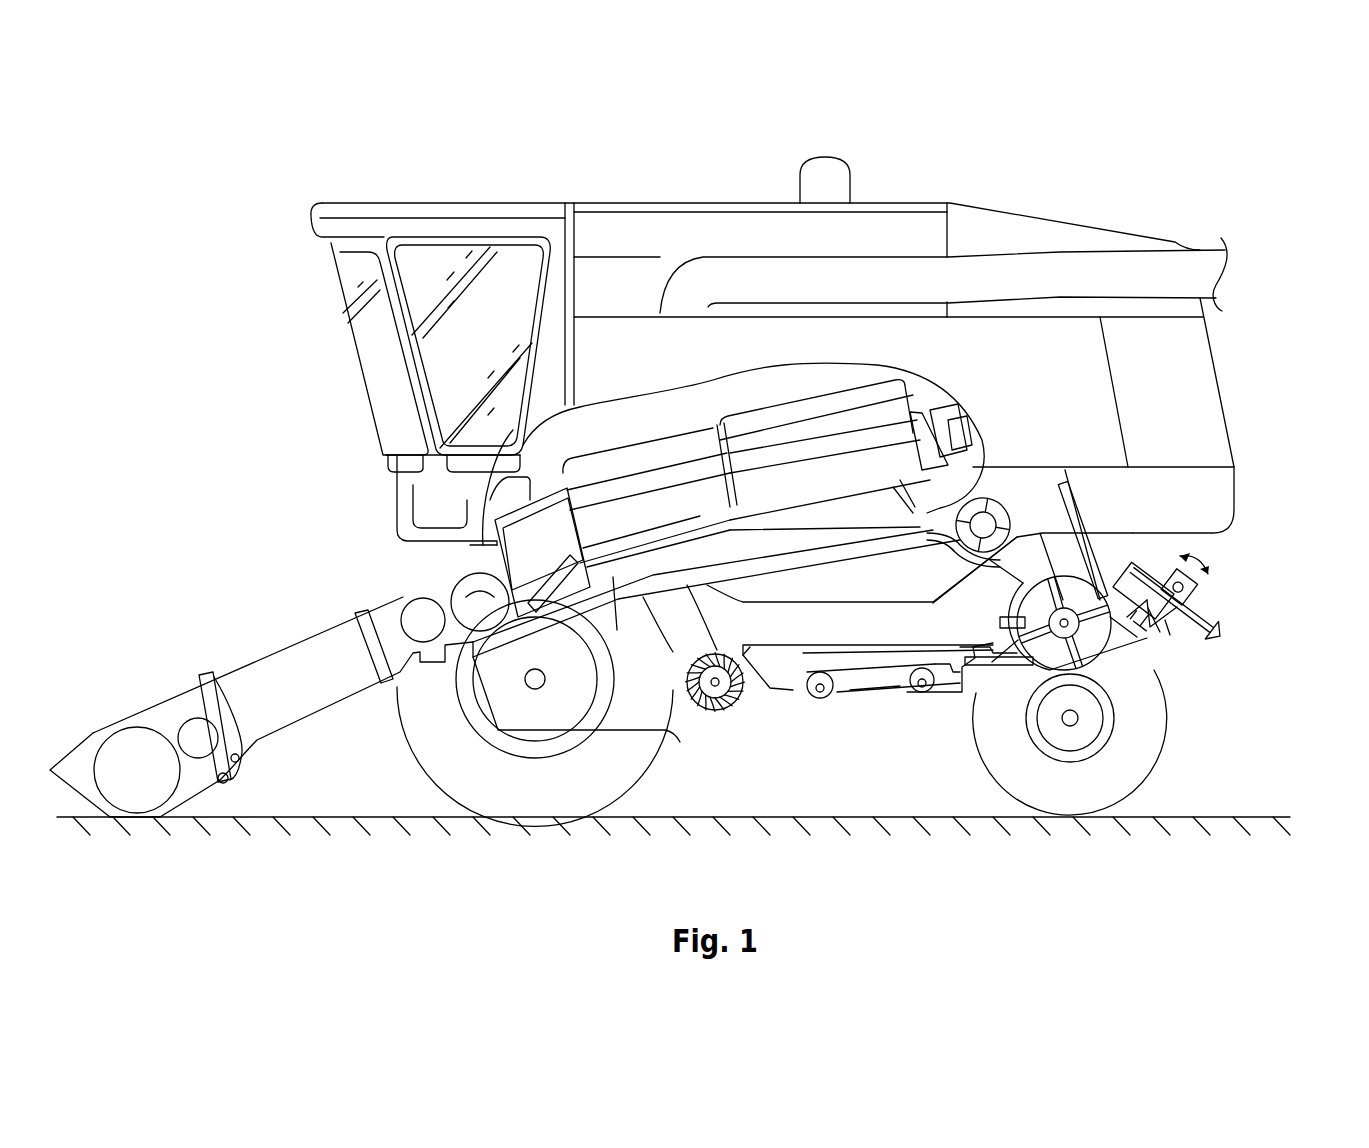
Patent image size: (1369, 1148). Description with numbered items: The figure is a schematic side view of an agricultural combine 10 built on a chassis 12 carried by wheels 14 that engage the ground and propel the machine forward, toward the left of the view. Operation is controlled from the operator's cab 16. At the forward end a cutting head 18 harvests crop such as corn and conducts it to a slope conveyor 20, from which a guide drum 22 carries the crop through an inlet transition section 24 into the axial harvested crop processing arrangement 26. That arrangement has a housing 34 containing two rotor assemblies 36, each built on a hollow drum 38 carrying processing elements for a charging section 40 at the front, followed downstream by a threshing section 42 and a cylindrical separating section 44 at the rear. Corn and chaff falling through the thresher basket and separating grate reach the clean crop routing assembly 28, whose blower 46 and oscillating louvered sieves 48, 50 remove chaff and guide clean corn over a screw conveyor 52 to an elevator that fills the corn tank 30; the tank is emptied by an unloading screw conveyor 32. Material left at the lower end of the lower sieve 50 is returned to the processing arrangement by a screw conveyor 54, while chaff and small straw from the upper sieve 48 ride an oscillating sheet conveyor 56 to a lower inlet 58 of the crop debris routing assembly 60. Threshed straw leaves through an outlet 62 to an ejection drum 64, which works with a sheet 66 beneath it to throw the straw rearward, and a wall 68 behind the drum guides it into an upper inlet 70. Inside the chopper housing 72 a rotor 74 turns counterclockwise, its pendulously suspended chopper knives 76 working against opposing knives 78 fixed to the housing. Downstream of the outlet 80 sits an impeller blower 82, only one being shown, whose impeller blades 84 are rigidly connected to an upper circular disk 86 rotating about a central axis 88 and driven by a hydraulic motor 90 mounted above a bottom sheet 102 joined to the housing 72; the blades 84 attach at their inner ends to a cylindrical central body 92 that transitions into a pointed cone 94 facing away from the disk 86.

The agricultural combine 10 is at (1022, 154).
The chassis 12 is at (790, 637).
The wheels 14 is at (437, 735).
The operator's cab 16 is at (437, 258).
The cutting head 18 is at (172, 712).
The slope conveyor 20 is at (275, 665).
The guide drum 22 is at (447, 594).
The inlet transition section 24 is at (535, 585).
The axial harvested crop processing arrangement 26 is at (768, 562).
The clean crop routing assembly 28 is at (872, 690).
The corn tank 30 is at (643, 266).
The unloading screw conveyor 32 is at (929, 296).
The housing 34 is at (750, 647).
The rotor assemblies 36 is at (613, 577).
The hollow drum 38 is at (905, 408).
The charging section 40 is at (385, 456).
The threshing section 42 is at (658, 440).
The separating section 44 is at (820, 400).
The blower 46 is at (727, 687).
The upper sieve 48 is at (833, 653).
The lower sieve 50 is at (893, 687).
The screw conveyor 52 is at (820, 698).
The screw conveyor 54 is at (927, 693).
The oscillating sheet conveyor 56 is at (992, 668).
The lower inlet 58 is at (1030, 662).
The crop debris routing assembly 60 is at (1147, 650).
The outlet 62 is at (960, 588).
The ejection drum 64 is at (983, 512).
The sheet 66 is at (957, 550).
The wall 68 is at (1077, 487).
The upper inlet 70 is at (1043, 557).
The housing 72 is at (1137, 655).
The rotor 74 is at (1103, 603).
The chopper knives 76 is at (1100, 597).
The opposing knives 78 is at (1000, 622).
The outlet 80 is at (1140, 667).
The impeller blower 82 is at (1255, 548).
The impeller blades 84 is at (1177, 643).
The upper circular disk 86 is at (1160, 565).
The central axis 88 is at (1212, 578).
The hydraulic motor 90 is at (1185, 592).
The cylindrical central body 92 is at (1157, 643).
The cone 94 is at (1147, 660).
The bottom sheet 102 is at (1153, 537).